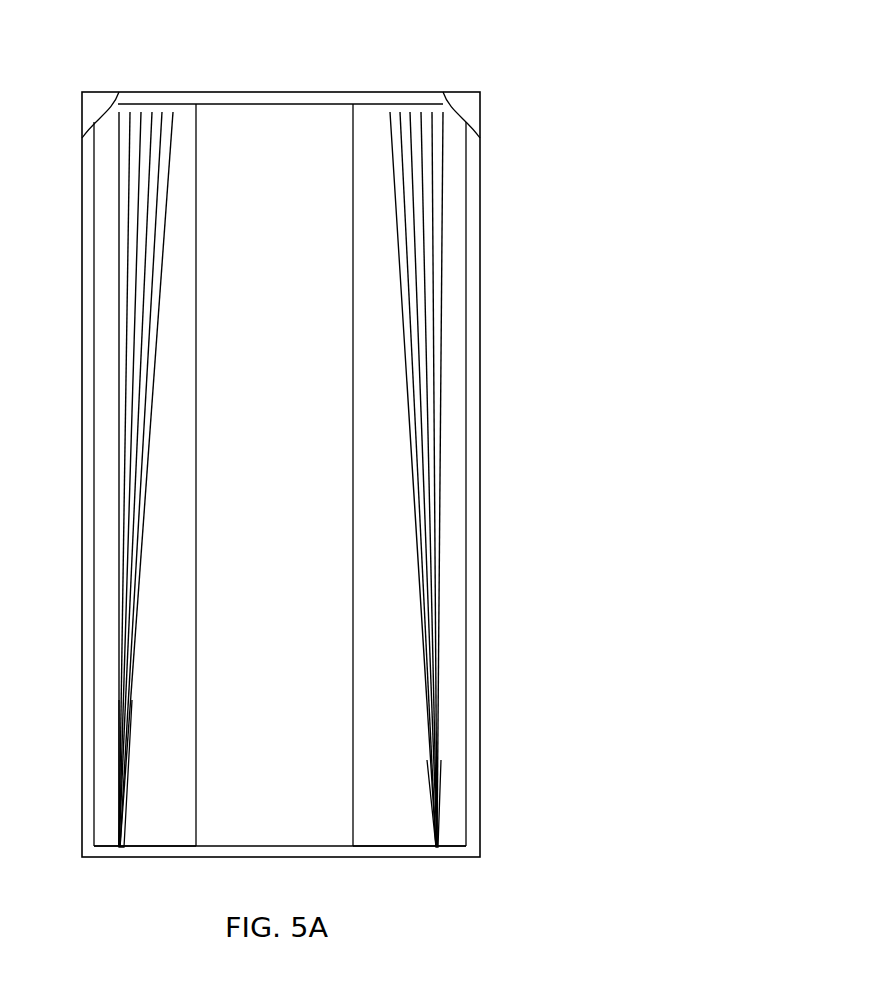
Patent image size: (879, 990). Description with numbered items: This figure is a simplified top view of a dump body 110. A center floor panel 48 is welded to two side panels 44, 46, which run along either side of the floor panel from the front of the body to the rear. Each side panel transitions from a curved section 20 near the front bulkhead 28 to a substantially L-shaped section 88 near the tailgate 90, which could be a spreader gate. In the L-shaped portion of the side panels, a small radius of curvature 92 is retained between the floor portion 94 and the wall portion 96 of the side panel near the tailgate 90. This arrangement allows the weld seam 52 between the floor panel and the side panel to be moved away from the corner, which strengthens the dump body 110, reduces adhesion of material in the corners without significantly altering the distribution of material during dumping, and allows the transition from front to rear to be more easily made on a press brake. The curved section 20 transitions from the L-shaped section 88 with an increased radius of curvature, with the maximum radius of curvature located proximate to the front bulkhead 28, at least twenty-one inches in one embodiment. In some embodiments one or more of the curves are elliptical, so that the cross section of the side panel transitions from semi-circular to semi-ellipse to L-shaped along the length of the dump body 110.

The dump body 110 is at (498, 84).
The front bulkhead 28 is at (262, 92).
The center floor panel 48 is at (302, 110).
The curved section 20 is at (138, 253).
The L-shaped section 88 is at (166, 754).
The weld seam 52 is at (351, 766).
The floor portion 94 is at (395, 783).
The small radius of curvature 92 is at (438, 817).
The wall portion 96 is at (462, 824).
The side panel 44 is at (147, 848).
The tailgate 90 is at (351, 850).
The side panel 46 is at (393, 848).